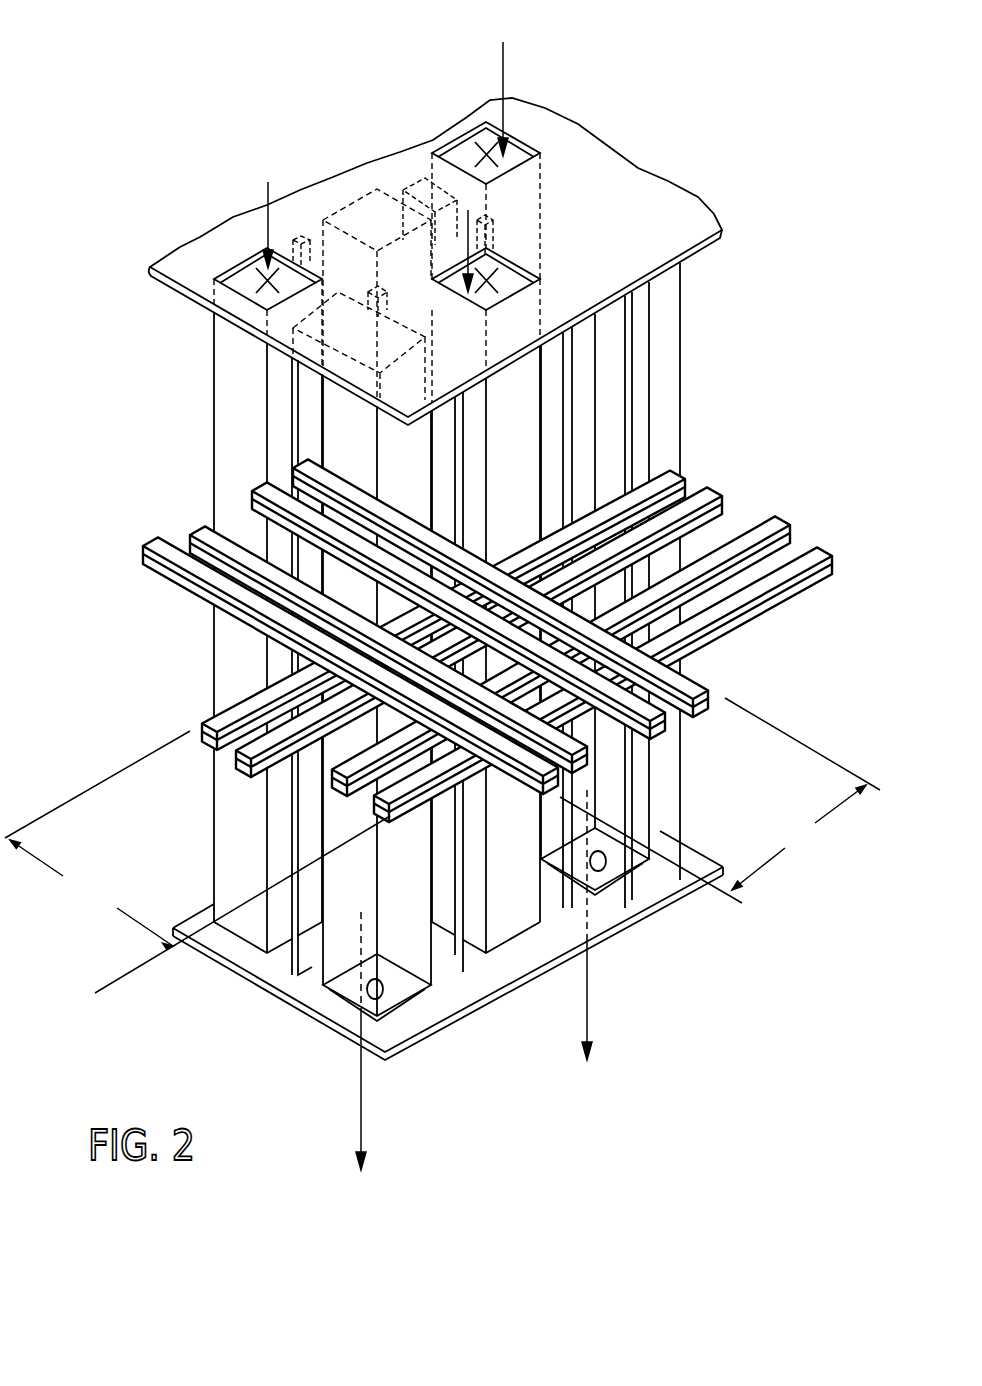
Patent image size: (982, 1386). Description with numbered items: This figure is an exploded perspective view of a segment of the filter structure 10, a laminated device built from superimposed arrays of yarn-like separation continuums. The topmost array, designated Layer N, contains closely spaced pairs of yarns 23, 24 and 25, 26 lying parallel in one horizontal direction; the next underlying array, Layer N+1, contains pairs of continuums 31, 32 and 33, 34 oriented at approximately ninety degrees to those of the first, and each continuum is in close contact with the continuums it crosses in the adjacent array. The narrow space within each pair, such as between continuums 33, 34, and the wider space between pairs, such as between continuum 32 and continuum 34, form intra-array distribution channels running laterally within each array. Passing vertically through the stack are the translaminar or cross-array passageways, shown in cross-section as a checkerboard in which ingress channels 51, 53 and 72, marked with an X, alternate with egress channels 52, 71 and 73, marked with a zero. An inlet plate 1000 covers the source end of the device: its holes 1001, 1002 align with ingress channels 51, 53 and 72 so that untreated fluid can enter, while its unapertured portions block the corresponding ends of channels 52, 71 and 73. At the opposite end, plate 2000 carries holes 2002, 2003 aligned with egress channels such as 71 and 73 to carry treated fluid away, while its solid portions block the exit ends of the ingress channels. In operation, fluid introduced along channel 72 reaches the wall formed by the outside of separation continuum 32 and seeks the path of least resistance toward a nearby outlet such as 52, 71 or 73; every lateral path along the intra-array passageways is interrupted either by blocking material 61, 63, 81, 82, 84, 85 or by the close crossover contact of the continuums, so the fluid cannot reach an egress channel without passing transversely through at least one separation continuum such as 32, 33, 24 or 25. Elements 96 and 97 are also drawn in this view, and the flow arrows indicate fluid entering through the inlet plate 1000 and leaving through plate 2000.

The filter structure 10 is at (442, 611).
The yarn 23 is at (672, 472).
The yarn 24 is at (712, 490).
The yarn 25 is at (783, 525).
The yarn 26 is at (778, 588).
The continuum 31 is at (155, 552).
The separation continuum 32 is at (196, 526).
The continuum 33 is at (665, 720).
The continuum 34 is at (700, 700).
The translaminar passageway 51 is at (220, 397).
The translaminar passageway 52 is at (363, 207).
The translaminar passageway 53 is at (535, 170).
The blocking material 61 is at (290, 960).
The blocking material 63 is at (558, 170).
The translaminar passageway 71 is at (307, 998).
The cross-array distribution channel 72 is at (508, 935).
The translaminar passageway 73 is at (622, 207).
The blocking material 81 is at (300, 237).
The blocking material 82 is at (490, 985).
The blocking material 84 is at (413, 173).
The blocking material 85 is at (568, 890).
The flow passage 96 is at (380, 283).
The flow passage 97 is at (487, 213).
The inlet plate 1000 is at (168, 263).
The hole 1001 is at (247, 268).
The hole 1002 is at (458, 147).
The end plate 2000 is at (384, 1035).
The hole 2002 is at (440, 1012).
The hole 2003 is at (607, 887).